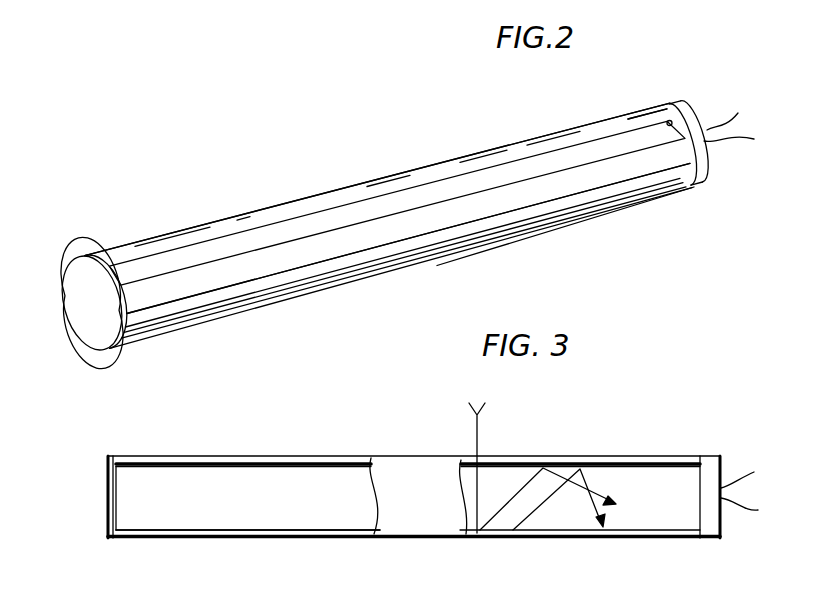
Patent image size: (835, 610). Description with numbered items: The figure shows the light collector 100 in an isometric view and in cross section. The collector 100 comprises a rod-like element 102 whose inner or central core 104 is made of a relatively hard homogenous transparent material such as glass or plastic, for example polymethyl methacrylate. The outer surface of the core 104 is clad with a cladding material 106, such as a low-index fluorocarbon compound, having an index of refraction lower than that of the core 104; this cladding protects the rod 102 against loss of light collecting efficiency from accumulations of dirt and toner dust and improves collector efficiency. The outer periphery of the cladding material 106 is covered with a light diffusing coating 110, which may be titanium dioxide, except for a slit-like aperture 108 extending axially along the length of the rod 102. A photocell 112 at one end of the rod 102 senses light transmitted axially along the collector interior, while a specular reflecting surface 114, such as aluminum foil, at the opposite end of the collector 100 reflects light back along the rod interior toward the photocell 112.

In FIG. 2, the collector 100 is at (618, 220).
In FIG. 3, the collector 100 is at (657, 449).
In FIG. 2, the rod-like element 102 is at (527, 127).
In FIG. 3, the rod-like element 102 is at (592, 389).
In FIG. 2, the inner or central core 104 is at (76, 278).
In FIG. 3, the inner or central core 104 is at (215, 500).
In FIG. 2, the cladding material 106 is at (703, 68).
In FIG. 3, the cladding material 106 is at (312, 533).
In FIG. 2, the slit-like aperture 108 is at (300, 234).
In FIG. 2, the light diffusing coating 110 is at (227, 292).
In FIG. 3, the light diffusing coating 110 is at (376, 535).
In FIG. 2, the photocell 112 is at (705, 166).
In FIG. 3, the photocell 112 is at (710, 534).
In FIG. 2, the specular reflecting surface 114 is at (102, 330).
In FIG. 3, the specular reflecting surface 114 is at (110, 490).